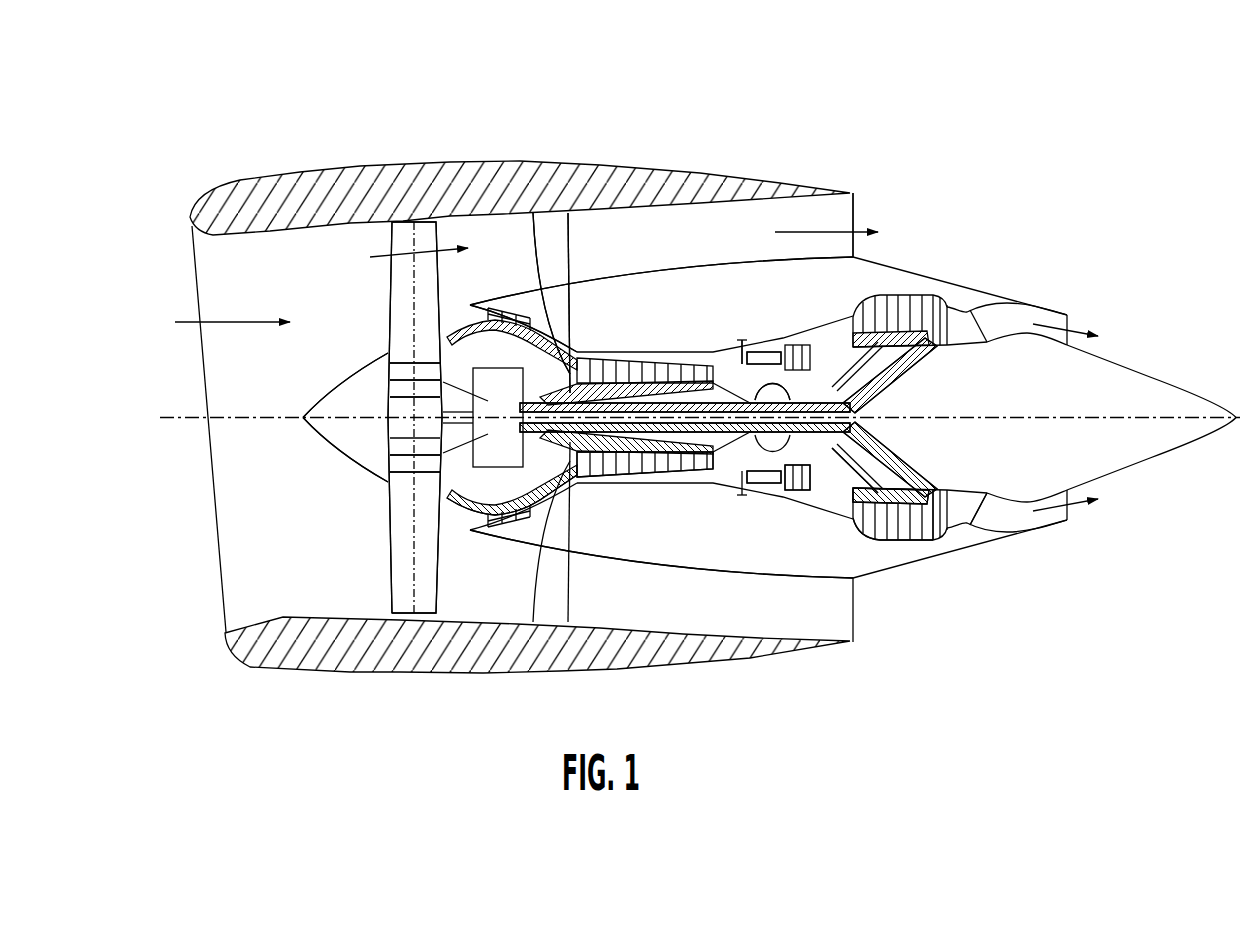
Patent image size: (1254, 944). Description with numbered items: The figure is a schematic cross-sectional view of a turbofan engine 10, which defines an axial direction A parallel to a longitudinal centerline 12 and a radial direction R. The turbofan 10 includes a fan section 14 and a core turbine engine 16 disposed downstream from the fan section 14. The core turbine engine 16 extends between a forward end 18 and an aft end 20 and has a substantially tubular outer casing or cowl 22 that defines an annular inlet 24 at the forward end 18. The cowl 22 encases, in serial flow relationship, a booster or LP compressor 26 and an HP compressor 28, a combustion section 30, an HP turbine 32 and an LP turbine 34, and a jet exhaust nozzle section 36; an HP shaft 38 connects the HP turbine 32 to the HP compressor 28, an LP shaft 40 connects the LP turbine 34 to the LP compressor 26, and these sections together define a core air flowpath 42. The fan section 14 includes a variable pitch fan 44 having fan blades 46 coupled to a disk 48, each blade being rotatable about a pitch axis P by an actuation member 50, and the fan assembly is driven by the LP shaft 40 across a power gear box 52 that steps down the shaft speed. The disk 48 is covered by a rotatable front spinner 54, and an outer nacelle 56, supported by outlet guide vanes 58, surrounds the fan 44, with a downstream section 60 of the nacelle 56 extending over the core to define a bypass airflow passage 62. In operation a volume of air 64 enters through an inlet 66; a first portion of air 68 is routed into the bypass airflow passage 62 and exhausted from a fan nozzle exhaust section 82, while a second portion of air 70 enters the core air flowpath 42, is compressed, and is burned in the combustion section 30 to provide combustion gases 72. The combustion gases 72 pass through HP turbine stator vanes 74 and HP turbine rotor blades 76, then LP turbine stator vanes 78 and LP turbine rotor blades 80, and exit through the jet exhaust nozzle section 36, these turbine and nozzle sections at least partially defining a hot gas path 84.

The turbofan engine 10 is at (985, 175).
The longitudinal centerline 12 is at (1010, 412).
The fan section 14 is at (430, 130).
The core turbine engine 16 is at (730, 307).
The forward end 18 is at (532, 228).
The aft end 20 is at (1025, 197).
The outer casing or cowl 22 is at (717, 563).
The annular inlet 24 is at (483, 515).
The booster or low pressure (LP) compressor 26 is at (532, 478).
The high pressure (HP) compressor 28 is at (600, 478).
The combustion section 30 is at (753, 494).
The high pressure (HP) turbine 32 is at (880, 468).
The low pressure (LP) turbine 34 is at (930, 538).
The jet exhaust nozzle section 36 is at (988, 522).
The high pressure (HP) shaft or spool 38 is at (770, 385).
The low pressure (LP) shaft or spool 40 is at (896, 378).
The core air flowpath 42 is at (552, 500).
The variable pitch fan 44 is at (357, 467).
The fan blades 46 is at (388, 560).
The disk 48 is at (387, 372).
The actuation member 50 is at (387, 393).
The power gear box 52 is at (568, 214).
The rotatable front spinner 54 is at (323, 433).
The annular fan casing or outer nacelle 56 is at (433, 675).
The outlet guide vanes 58 is at (568, 240).
The downstream section of the nacelle 60 is at (787, 197).
The bypass airflow passage 62 is at (664, 251).
The volume of air 64 is at (242, 318).
The inlet 66 is at (218, 620).
The first portion of air 68 is at (785, 228).
The second portion of air 70 is at (460, 312).
The combustion gases 72 is at (798, 343).
The HP turbine stator vanes 74 is at (773, 484).
The HP turbine rotor blades 76 is at (862, 440).
The LP turbine stator vanes 78 is at (853, 530).
The LP turbine rotor blades 80 is at (870, 538).
The fan nozzle exhaust section 82 is at (843, 218).
The hot gas path 84 is at (843, 325).
The pitch axis P is at (520, 224).
The radial direction R is at (70, 292).
The axial direction A is at (482, 835).